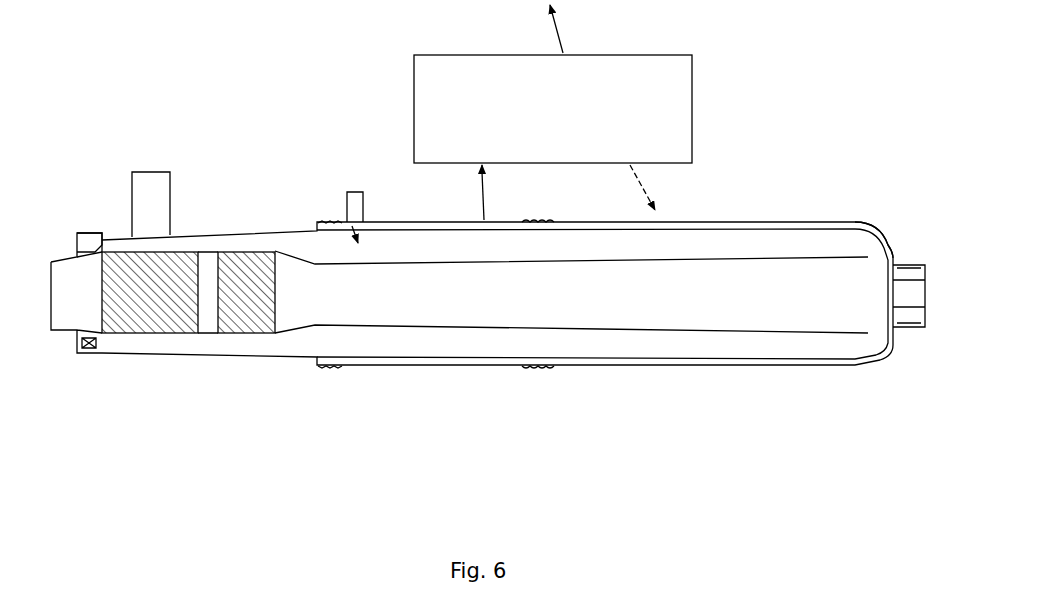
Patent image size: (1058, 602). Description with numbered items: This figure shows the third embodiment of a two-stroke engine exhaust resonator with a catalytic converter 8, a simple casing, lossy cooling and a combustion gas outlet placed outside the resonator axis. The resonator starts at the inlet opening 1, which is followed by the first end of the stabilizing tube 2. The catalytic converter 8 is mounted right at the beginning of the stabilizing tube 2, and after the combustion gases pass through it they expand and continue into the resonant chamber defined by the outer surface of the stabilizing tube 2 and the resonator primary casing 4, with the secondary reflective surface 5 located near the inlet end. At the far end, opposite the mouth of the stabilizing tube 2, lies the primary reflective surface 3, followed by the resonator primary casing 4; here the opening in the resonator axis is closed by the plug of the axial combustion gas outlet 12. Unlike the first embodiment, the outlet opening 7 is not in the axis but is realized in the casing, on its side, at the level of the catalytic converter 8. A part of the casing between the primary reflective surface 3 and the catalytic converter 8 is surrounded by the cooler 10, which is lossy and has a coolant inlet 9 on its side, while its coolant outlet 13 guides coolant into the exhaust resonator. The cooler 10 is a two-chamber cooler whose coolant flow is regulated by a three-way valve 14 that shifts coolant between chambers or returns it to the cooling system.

The inlet opening 1 is at (50, 331).
The stabilizing tube 2 is at (677, 341).
The primary reflective surface 3 is at (899, 236).
The resonator primary casing 4 is at (771, 231).
The secondary reflective surface 5 is at (101, 239).
The outlet opening 7 is at (150, 171).
The catalytic converter 8 is at (166, 333).
The coolant inlet 9 is at (356, 191).
The cooler 10 is at (436, 366).
The plug of the axial combustion gas outlet 12 is at (922, 312).
The coolant outlet 13 is at (476, 133).
The three-way valve 14 is at (553, 137).